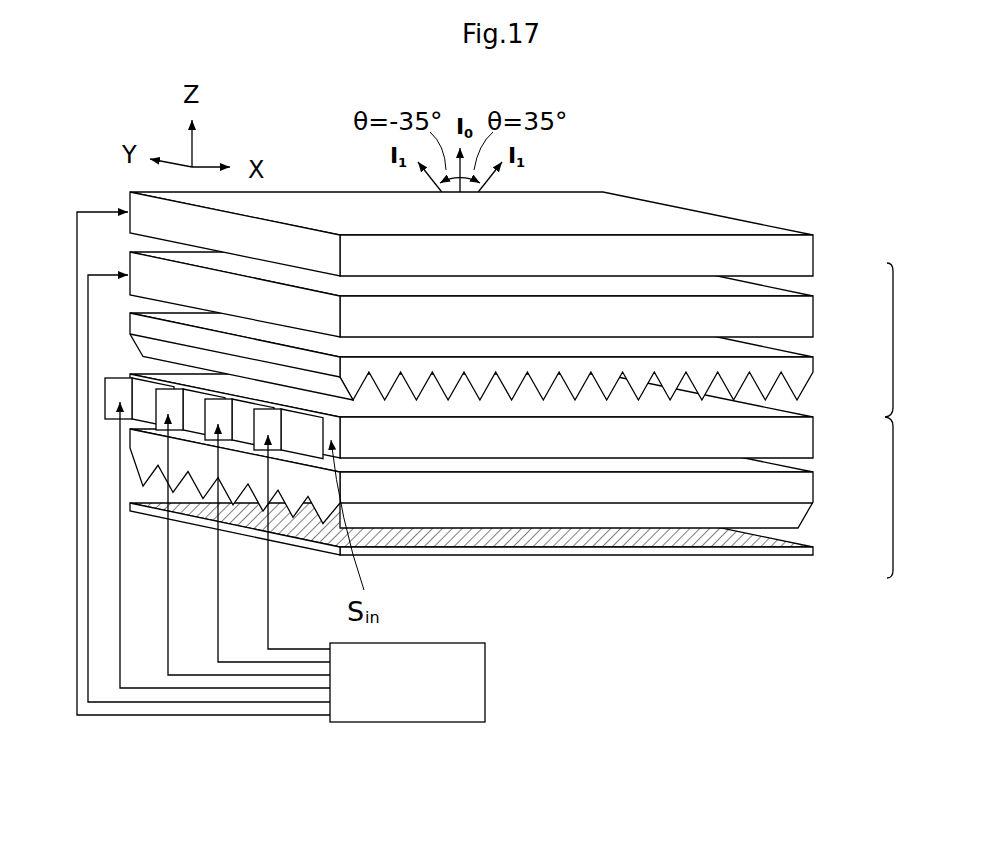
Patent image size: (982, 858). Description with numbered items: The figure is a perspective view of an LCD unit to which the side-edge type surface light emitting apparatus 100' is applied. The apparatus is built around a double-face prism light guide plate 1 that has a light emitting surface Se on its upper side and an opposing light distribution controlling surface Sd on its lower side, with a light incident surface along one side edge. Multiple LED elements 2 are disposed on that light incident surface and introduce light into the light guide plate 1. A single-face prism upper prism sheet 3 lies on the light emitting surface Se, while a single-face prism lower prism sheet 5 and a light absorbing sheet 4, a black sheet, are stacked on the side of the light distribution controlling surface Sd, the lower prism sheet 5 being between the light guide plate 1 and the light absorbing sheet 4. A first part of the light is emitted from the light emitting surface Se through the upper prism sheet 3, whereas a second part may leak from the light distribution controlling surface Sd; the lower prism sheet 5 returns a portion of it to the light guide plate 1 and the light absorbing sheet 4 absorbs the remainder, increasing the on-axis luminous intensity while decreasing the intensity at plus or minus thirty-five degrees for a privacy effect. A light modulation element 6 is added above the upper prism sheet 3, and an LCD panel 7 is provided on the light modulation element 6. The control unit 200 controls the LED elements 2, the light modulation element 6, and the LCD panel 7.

The double-face prism light guide plate 1 is at (813, 440).
The LED elements 2 is at (262, 431).
The upper prism sheet 3 is at (813, 367).
The light absorbing sheet 4 is at (813, 552).
The lower prism sheet 5 is at (813, 487).
The light modulation element 6 is at (813, 320).
The LCD panel 7 is at (813, 258).
The side-edge type surface light emitting apparatus 100' is at (923, 420).
The control unit 200 is at (486, 651).
The light emitting surface Se is at (782, 401).
The light distribution controlling surface Sd is at (776, 465).